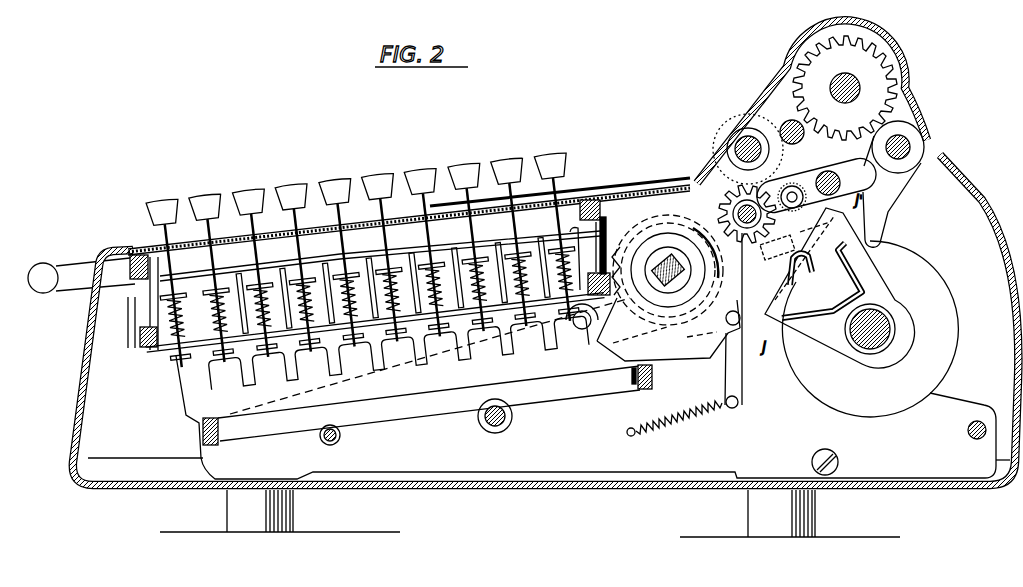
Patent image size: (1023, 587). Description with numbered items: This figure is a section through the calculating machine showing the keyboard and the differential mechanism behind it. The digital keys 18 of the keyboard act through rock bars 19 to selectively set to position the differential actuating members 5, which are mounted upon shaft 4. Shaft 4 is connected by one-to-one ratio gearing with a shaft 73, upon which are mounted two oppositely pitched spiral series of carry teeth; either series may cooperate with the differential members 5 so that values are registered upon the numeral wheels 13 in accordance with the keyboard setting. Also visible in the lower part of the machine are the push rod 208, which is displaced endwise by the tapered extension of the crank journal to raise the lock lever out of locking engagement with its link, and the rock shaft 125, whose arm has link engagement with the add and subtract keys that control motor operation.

The digital keys 18 is at (502, 163).
The numeral wheels 13 is at (735, 128).
The differential actuating members 5 is at (622, 245).
The shaft 4 is at (669, 258).
The shaft 73 is at (888, 318).
The rock bars 19 is at (400, 408).
The rock shaft 125 is at (509, 419).
The push rod 208 is at (322, 440).